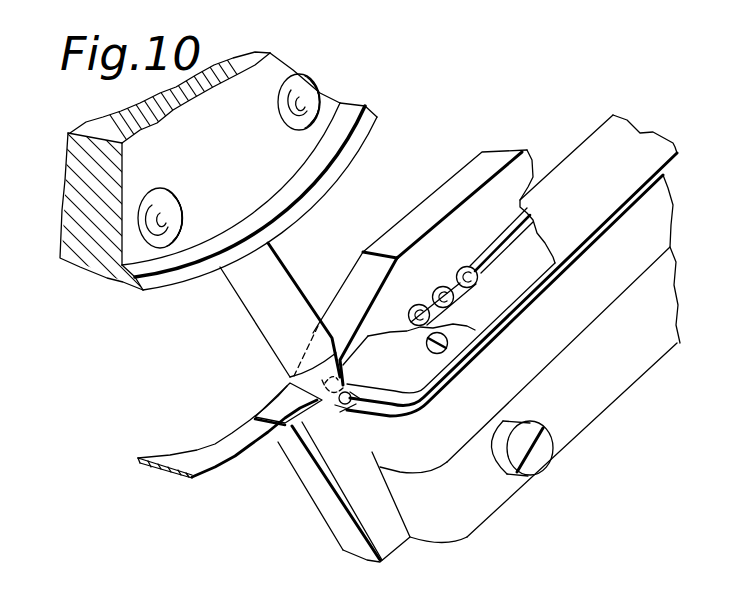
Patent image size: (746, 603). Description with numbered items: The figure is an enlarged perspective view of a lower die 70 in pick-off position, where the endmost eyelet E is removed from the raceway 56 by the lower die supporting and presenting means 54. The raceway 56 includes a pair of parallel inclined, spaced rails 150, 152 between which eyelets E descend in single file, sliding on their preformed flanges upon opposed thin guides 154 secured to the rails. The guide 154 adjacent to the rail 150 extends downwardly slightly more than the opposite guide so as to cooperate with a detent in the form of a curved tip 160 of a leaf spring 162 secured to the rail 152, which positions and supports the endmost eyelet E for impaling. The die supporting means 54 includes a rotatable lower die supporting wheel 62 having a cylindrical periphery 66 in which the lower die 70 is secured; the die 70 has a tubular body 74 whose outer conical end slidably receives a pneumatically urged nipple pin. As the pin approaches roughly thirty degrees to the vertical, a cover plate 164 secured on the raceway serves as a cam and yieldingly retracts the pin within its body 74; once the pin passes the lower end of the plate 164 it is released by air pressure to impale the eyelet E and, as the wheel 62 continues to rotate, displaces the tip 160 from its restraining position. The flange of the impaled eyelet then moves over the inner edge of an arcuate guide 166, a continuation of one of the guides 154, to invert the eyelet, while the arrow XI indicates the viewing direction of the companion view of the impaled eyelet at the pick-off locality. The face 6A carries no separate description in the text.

The lower die supporting and presenting means 54 is at (112, 308).
The front face of carrier block 6A is at (237, 177).
The lower die supporting wheel 62 is at (349, 109).
The cylindrical periphery 66 is at (352, 152).
The tubular body 74 is at (290, 318).
The lower die 70 is at (272, 340).
The rail 150 is at (472, 247).
The thin guide 154 is at (515, 236).
The eyelet E is at (452, 290).
The cover plate 164 is at (405, 374).
The leaf spring 162 is at (578, 318).
The rail 152 is at (618, 371).
The raceway 56 is at (617, 445).
The curved tip 160 is at (383, 473).
The arcuate guide 166 is at (210, 480).
The section indicator XI is at (288, 497).